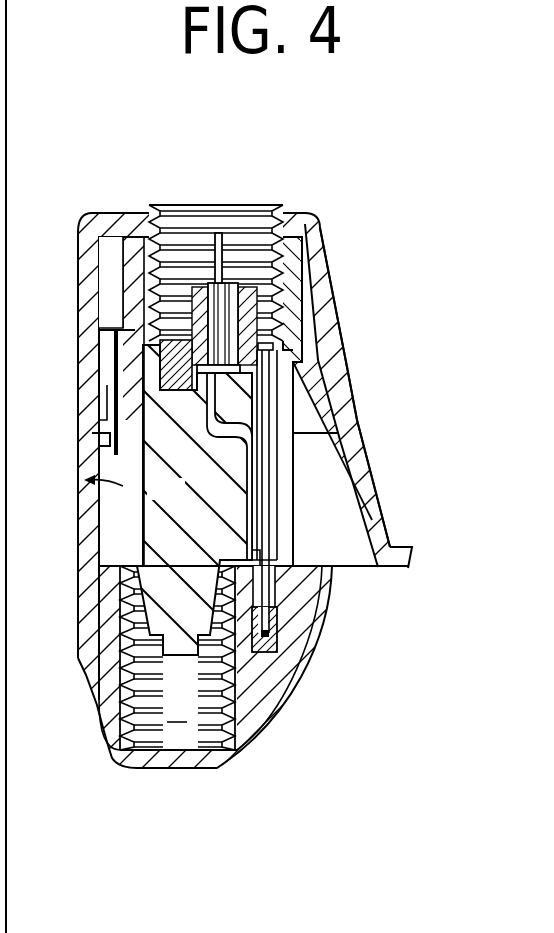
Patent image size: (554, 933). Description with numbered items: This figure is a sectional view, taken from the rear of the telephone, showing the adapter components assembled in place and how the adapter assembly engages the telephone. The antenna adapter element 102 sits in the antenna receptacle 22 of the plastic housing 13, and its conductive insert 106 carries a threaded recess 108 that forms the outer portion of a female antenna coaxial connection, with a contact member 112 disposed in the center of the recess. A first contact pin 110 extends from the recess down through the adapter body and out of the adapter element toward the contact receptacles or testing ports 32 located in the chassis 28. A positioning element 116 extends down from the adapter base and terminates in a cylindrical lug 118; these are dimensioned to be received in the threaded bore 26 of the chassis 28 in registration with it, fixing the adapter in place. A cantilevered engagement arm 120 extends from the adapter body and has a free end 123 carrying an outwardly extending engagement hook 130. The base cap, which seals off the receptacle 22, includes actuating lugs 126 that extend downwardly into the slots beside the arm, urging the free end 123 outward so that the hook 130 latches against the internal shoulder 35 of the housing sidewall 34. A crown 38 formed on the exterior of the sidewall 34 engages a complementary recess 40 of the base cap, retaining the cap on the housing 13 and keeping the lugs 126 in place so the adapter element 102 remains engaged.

The plastic housing 13 is at (74, 603).
The antenna receptacle 22 is at (340, 488).
The threaded bore 26 is at (238, 712).
The chassis 28 is at (318, 588).
The testing ports 32 is at (274, 645).
The housing sidewall 34 is at (376, 517).
The internal shoulder 35 is at (318, 435).
The crown 38 is at (328, 358).
The recess 40 is at (324, 386).
The antenna adapter element 102 is at (198, 500).
The conductive insert 106 is at (185, 203).
The threaded recess 108 is at (268, 216).
The first contact pin 110 is at (266, 600).
The contact member 112 is at (218, 236).
The positioning element 116 is at (158, 596).
The cylindrical lug 118 is at (172, 724).
The engagement arm 120 is at (100, 378).
The free end 123 is at (105, 440).
The lugs 126 is at (99, 335).
The engagement hook 130 is at (80, 462).